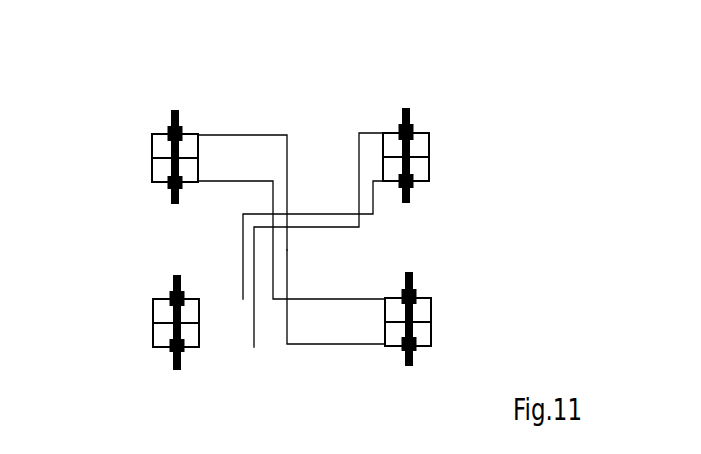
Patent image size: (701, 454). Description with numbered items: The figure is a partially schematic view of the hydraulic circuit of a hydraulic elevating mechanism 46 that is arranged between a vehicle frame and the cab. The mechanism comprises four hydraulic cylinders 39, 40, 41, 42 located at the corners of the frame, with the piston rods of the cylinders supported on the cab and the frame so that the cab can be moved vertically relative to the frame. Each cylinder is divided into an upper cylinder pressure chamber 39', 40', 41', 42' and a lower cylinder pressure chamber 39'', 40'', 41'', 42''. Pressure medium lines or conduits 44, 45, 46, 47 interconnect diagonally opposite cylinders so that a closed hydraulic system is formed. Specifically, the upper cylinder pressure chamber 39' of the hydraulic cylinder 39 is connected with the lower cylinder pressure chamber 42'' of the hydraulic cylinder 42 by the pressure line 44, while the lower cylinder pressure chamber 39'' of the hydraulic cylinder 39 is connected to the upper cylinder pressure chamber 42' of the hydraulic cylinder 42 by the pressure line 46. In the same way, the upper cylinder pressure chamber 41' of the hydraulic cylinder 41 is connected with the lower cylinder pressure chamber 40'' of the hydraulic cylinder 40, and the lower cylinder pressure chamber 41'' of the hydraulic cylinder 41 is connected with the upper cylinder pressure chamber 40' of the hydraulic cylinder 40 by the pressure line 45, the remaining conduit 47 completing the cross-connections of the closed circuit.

The hydraulic cylinder 39 is at (166, 150).
The upper cylinder pressure chamber 39' is at (190, 125).
The lower cylinder pressure chamber 39'' is at (158, 183).
The hydraulic cylinder 40 is at (161, 320).
The upper cylinder pressure chamber 40' is at (189, 288).
The lower cylinder pressure chamber 40'' is at (172, 355).
The hydraulic cylinder 41 is at (427, 139).
The upper cylinder pressure chamber 41' is at (427, 136).
The lower cylinder pressure chamber 41'' is at (423, 185).
The hydraulic cylinder 42 is at (414, 327).
The upper cylinder pressure chamber 42' is at (425, 288).
The lower cylinder pressure chamber 42'' is at (397, 355).
The pressure line 44 is at (288, 162).
The pressure line 45 is at (242, 222).
The pressure line 46 is at (275, 292).
The pressure medium line 47 is at (289, 261).